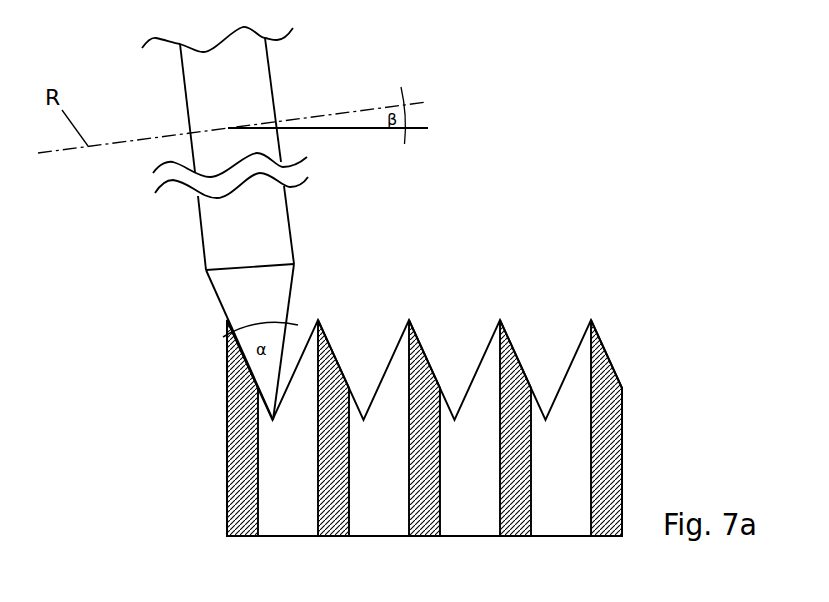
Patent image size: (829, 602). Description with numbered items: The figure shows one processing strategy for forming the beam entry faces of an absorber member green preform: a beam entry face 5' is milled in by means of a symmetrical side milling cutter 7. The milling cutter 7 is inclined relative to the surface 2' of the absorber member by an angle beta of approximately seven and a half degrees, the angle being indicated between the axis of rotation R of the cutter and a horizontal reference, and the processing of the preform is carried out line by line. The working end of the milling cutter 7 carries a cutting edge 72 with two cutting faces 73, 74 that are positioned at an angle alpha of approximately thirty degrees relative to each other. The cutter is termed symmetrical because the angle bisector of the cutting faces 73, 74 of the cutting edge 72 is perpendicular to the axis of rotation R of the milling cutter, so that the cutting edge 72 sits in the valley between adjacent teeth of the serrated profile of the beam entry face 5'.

The symmetrical side milling cutter 7 is at (221, 223).
The cutting edge 72 is at (267, 278).
The cutting face 73 is at (218, 299).
The cutting face 74 is at (287, 320).
The beam entry face 5' is at (434, 411).
The surface of the absorber member 2' is at (424, 379).